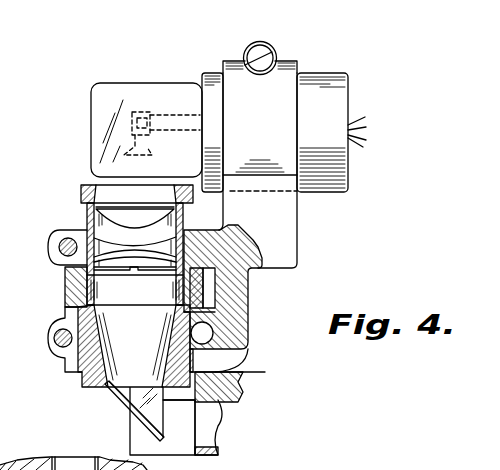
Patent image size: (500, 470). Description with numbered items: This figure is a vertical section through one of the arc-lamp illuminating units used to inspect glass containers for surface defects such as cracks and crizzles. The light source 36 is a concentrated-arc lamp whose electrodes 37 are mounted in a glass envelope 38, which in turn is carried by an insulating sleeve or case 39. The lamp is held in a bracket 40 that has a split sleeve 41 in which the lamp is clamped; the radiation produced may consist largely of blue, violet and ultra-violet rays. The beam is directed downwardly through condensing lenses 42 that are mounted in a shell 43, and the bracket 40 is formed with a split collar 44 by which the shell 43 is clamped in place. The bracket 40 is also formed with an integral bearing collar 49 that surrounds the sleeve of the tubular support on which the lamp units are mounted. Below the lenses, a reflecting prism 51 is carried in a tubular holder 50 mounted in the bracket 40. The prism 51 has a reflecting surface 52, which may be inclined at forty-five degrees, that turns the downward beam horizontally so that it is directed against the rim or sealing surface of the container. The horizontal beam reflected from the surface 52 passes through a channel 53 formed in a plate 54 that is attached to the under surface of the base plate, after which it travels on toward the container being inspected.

The light source 36 is at (183, 52).
The electrodes 37 is at (123, 148).
The glass envelope 38 is at (131, 85).
The insulating sleeve or case 39 is at (329, 81).
The bracket 40 is at (284, 243).
The split sleeve 41 is at (289, 62).
The condensing lenses 42 is at (108, 236).
The shell 43 is at (80, 190).
The split collar 44 is at (82, 246).
The bearing collar 49 is at (178, 469).
The tubular holder 50 is at (91, 379).
The reflecting prism 51 is at (130, 396).
The reflecting surface 52 is at (123, 411).
The channel 53 is at (215, 426).
The plate 54 is at (250, 372).